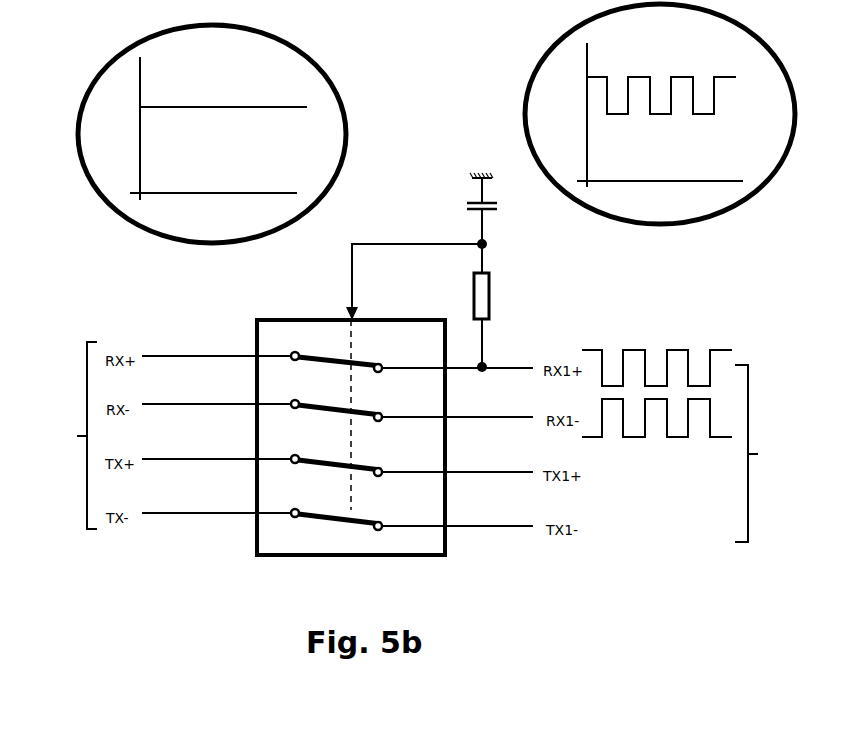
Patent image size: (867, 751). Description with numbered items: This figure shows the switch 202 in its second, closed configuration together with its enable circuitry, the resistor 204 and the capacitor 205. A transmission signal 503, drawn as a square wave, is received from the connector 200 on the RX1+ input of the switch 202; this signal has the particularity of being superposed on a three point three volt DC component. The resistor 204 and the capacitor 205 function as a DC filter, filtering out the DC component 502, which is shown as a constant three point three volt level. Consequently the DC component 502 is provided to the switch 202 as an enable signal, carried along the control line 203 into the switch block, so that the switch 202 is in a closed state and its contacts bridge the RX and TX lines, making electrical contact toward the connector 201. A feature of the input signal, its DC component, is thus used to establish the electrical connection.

The connector 200 is at (820, 501).
The connector 201 is at (77, 483).
The switch 202 is at (324, 594).
The switch control signal 203 is at (411, 302).
The resistor 204 is at (548, 309).
The capacitor 205 is at (556, 226).
The DC component 502 is at (466, 228).
The transmission signal 503 is at (499, 350).